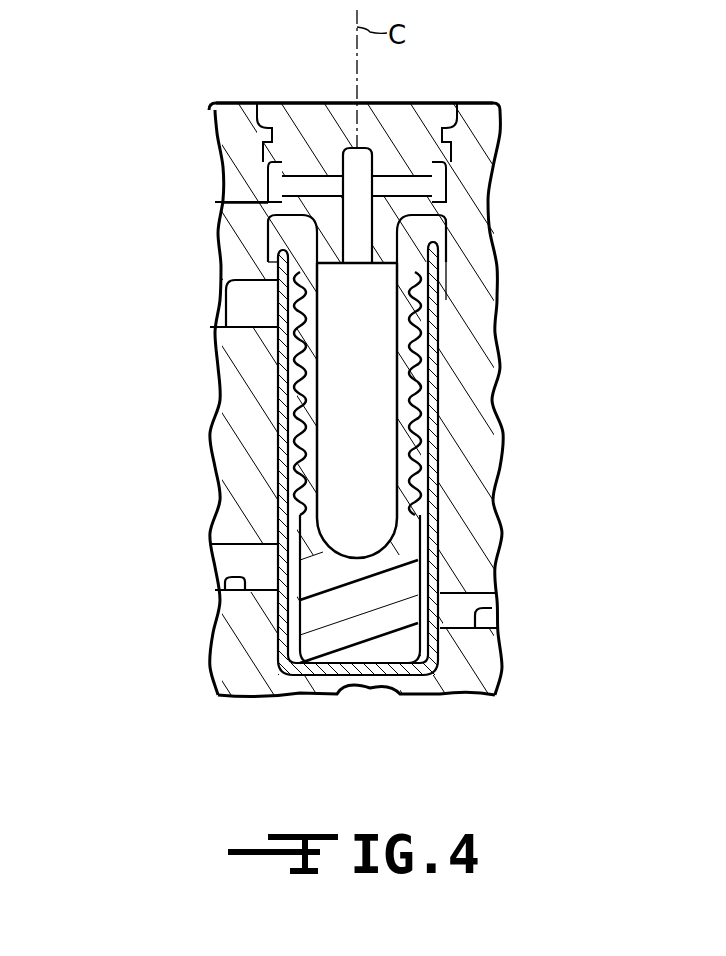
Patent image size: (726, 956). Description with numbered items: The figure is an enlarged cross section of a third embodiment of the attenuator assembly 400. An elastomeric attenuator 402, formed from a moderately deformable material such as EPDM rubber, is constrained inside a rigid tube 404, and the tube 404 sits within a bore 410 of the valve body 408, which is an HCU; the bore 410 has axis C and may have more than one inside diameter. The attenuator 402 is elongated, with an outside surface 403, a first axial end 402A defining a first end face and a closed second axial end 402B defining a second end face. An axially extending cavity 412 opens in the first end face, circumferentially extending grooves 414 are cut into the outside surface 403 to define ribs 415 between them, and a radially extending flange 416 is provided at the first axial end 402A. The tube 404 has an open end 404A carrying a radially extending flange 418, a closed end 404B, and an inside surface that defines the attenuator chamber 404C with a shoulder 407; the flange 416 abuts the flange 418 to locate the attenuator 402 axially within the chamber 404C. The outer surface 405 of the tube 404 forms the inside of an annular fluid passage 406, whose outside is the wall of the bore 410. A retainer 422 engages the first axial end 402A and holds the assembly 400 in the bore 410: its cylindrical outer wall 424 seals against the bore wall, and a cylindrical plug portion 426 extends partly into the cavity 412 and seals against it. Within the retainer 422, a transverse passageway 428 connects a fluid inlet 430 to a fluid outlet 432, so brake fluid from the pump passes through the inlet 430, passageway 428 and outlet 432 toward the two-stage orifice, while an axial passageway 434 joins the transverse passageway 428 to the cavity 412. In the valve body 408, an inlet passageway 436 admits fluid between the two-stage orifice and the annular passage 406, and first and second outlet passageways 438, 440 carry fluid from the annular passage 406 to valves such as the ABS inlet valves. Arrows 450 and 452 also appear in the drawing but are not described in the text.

The attenuator assembly 400 is at (118, 103).
The attenuator 402 is at (443, 560).
The first axial end 402A is at (432, 212).
The second axial end 402B is at (398, 688).
The outside surface 403 is at (432, 580).
The rigid tube 404 is at (449, 455).
The open end 404A is at (448, 228).
The closed end 404B is at (340, 688).
The attenuator chamber 404C is at (432, 378).
The outer surface 405 is at (450, 477).
The annular fluid passage 406 is at (442, 413).
The shoulder 407 is at (447, 243).
The valve body 408 is at (488, 667).
The bore 410 is at (450, 281).
The cavity 412 is at (432, 327).
The grooves 414 is at (278, 428).
The ribs 415 is at (300, 360).
The flange 416 is at (270, 237).
The flange 418 is at (268, 259).
The retainer 422 is at (432, 101).
The outer wall 424 is at (262, 150).
The plug portion 426 is at (327, 237).
The transverse passageway 428 is at (318, 183).
The fluid inlet 430 is at (270, 177).
The fluid outlet 432 is at (455, 176).
The axial passageway 434 is at (373, 170).
The inlet passageway 436 is at (486, 614).
The first outlet passageway 438 is at (236, 326).
The second outlet passageway 440 is at (230, 579).
The axial direction 450 is at (357, 522).
The lateral direction 452 is at (399, 622).